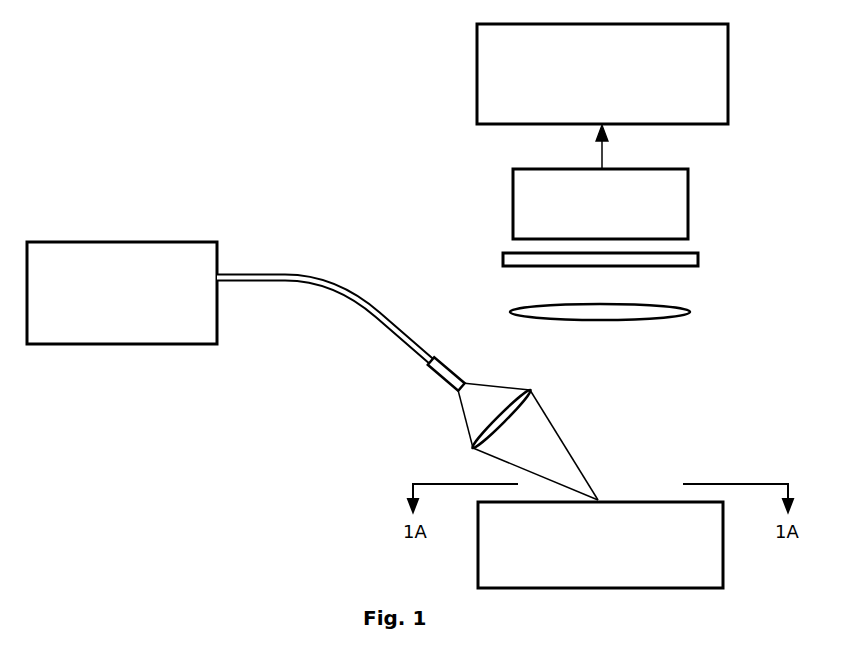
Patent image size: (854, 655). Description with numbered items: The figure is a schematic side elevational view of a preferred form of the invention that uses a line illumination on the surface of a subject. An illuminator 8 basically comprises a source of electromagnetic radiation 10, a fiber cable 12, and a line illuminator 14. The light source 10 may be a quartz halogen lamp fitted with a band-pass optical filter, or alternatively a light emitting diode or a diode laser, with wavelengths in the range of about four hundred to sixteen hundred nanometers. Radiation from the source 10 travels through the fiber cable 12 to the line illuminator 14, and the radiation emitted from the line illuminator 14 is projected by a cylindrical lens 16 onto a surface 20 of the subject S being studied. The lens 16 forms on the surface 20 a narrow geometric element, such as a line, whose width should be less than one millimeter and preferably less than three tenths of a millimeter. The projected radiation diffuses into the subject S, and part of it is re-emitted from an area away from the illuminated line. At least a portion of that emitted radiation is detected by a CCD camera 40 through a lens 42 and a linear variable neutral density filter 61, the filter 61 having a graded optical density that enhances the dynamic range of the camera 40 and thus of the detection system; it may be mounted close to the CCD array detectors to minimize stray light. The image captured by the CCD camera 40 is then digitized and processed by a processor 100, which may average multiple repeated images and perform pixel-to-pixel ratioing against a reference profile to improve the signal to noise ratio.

The illuminator 8 is at (324, 228).
The source of electromagnetic radiation 10 is at (97, 247).
The fiber cable 12 is at (355, 292).
The line illuminator 14 is at (450, 372).
The cylindrical lens 16 is at (528, 392).
The surface 20 is at (670, 582).
The subject S is at (723, 545).
The CCD camera 40 is at (683, 206).
The lens 42 is at (690, 310).
The linear variable neutral density filter 61 is at (688, 257).
The processor 100 is at (480, 50).